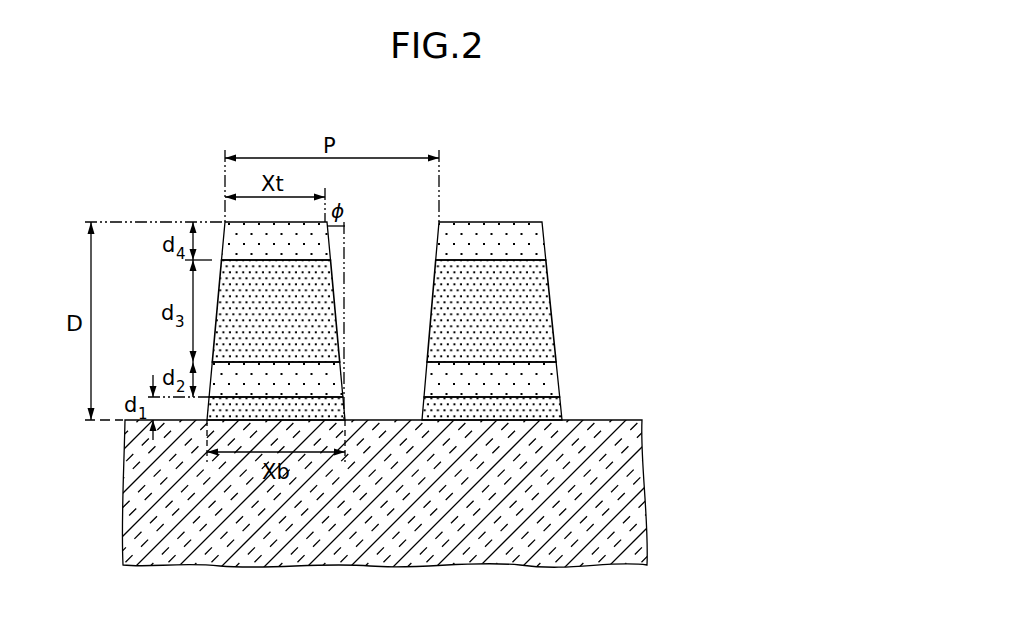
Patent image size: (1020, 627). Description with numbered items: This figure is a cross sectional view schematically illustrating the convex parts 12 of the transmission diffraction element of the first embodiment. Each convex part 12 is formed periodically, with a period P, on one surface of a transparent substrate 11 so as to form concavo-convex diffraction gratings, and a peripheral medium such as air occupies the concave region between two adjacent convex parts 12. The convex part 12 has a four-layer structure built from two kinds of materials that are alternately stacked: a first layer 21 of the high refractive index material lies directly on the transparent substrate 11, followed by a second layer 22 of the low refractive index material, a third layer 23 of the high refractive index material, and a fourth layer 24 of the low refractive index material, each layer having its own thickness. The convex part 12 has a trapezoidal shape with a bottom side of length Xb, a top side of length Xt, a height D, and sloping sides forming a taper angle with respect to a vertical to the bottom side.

The transparent substrate 11 is at (632, 482).
The convex part 12 is at (632, 221).
The first layer 21 is at (535, 412).
The second layer 22 is at (535, 382).
The third layer 23 is at (535, 317).
The fourth layer 24 is at (535, 240).